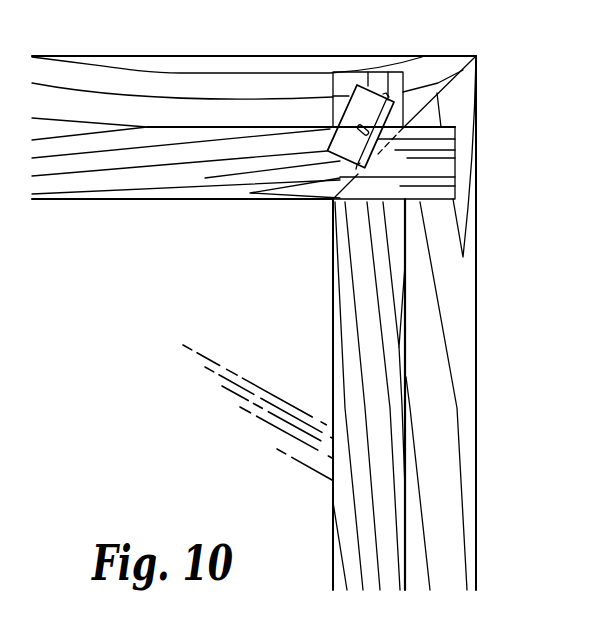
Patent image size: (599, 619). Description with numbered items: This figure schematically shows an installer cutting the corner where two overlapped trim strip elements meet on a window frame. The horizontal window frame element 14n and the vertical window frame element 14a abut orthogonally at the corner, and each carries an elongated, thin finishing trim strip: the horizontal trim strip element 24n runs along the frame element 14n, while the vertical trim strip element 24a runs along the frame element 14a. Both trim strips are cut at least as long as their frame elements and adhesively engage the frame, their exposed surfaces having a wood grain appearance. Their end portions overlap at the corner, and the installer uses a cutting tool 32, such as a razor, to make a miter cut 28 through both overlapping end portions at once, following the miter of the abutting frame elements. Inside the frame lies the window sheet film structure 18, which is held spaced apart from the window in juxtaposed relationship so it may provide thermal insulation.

The horizontal window frame element 14n is at (98, 56).
The horizontal trim strip element 24n is at (172, 137).
The cutting tool 32 is at (350, 107).
The miter cut 28 is at (417, 147).
The window sheet film structure 18 is at (243, 277).
The vertical window frame element 14a is at (477, 376).
The vertical trim strip element 24a is at (384, 463).